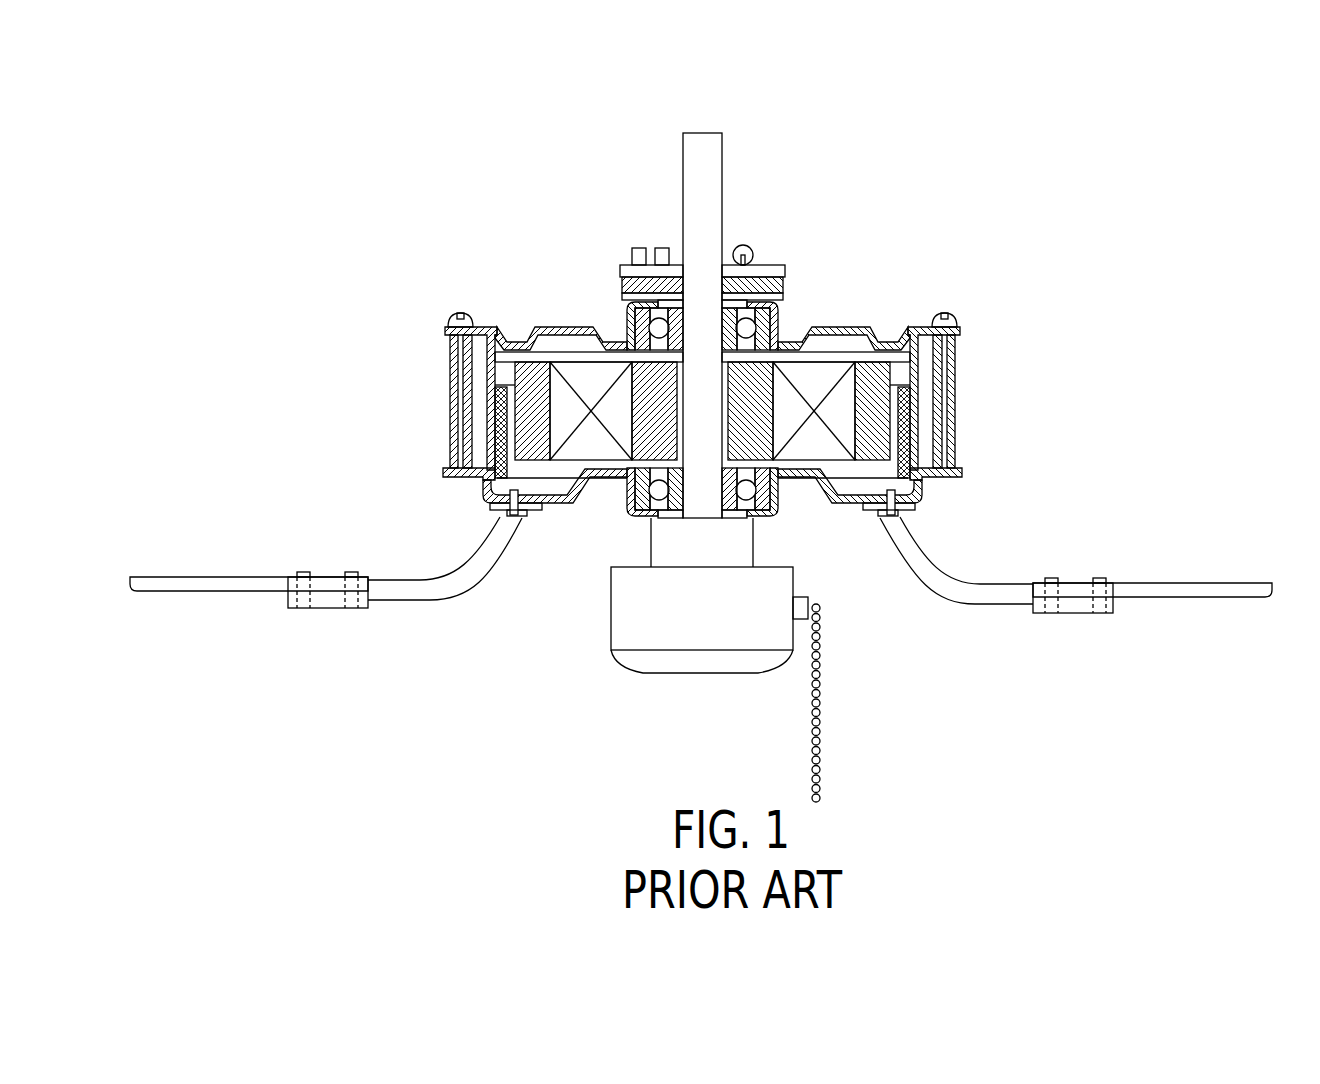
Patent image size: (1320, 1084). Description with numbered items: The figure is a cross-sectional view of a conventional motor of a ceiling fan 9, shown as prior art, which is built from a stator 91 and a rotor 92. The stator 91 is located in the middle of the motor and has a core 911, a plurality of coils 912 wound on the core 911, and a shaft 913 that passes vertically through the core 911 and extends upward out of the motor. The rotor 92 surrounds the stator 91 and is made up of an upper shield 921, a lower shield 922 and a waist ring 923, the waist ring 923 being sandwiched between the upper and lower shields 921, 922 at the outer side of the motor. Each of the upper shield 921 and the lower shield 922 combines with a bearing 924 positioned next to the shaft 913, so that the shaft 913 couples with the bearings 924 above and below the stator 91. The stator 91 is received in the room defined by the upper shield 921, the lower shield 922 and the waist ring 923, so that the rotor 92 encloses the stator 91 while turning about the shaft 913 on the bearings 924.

The motor of a ceiling fan 9 is at (985, 222).
The stator 91 is at (851, 485).
The core 911 is at (897, 378).
The coils 912 is at (823, 373).
The shaft 913 is at (713, 152).
The rotor 92 is at (500, 295).
The upper shield 921 is at (563, 320).
The lower shield 922 is at (553, 505).
The waist ring 923 is at (492, 368).
The bearing 924 is at (627, 310).